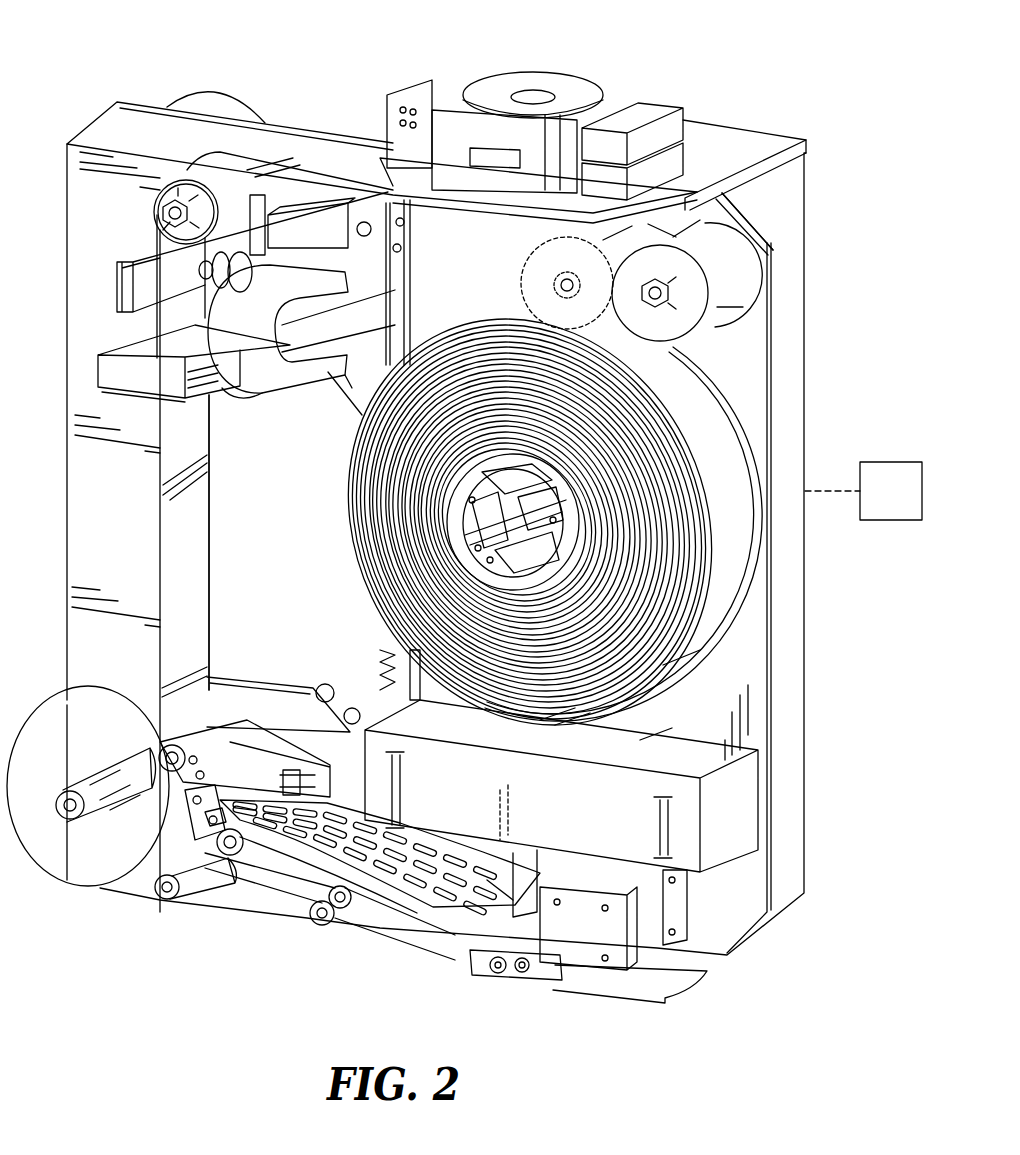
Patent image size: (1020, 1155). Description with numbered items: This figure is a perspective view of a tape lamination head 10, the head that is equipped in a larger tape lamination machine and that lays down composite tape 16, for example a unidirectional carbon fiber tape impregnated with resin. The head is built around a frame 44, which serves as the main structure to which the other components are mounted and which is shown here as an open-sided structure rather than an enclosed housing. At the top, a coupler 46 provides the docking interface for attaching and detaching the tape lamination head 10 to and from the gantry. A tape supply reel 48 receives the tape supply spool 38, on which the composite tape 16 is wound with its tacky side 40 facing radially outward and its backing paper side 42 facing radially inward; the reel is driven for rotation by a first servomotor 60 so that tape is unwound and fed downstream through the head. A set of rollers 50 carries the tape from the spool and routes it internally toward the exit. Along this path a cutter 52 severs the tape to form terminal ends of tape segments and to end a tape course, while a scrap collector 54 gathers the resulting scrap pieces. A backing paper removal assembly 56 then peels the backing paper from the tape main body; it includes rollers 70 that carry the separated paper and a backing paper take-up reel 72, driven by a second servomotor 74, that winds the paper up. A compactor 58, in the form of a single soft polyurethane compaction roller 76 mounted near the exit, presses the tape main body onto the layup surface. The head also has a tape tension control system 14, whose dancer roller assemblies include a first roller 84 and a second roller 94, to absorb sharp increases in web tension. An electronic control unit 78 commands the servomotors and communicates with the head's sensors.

The tape lamination head 10 is at (770, 100).
The tape tension control system 14 is at (757, 207).
The composite tape 16 is at (325, 173).
The tape supply spool 38 is at (745, 400).
The tacky side 40 is at (205, 603).
The backing paper side 42 is at (252, 167).
The frame 44 is at (137, 98).
The coupler 46 is at (512, 77).
The tape supply reel 48 is at (572, 565).
The rollers 50 is at (178, 185).
The cutter 52 is at (114, 290).
The scrap collector 54 is at (607, 820).
The backing paper removal assembly 56 is at (262, 933).
The compactor 58 is at (513, 968).
The first servomotor 60 is at (470, 525).
The rollers 70 is at (158, 897).
The backing paper take-up reel 72 is at (130, 700).
The second servomotor 74 is at (57, 802).
The compaction roller 76 is at (487, 963).
The electronic control unit 78 is at (863, 491).
The first roller 84 is at (527, 278).
The second roller 94 is at (213, 817).